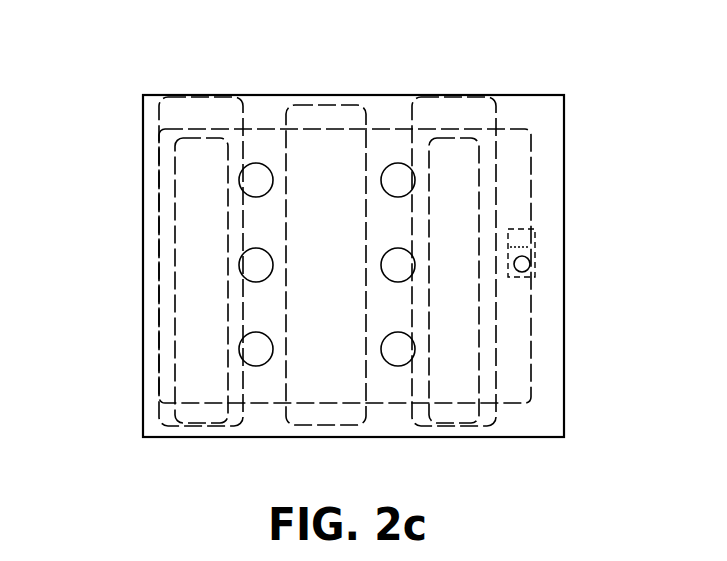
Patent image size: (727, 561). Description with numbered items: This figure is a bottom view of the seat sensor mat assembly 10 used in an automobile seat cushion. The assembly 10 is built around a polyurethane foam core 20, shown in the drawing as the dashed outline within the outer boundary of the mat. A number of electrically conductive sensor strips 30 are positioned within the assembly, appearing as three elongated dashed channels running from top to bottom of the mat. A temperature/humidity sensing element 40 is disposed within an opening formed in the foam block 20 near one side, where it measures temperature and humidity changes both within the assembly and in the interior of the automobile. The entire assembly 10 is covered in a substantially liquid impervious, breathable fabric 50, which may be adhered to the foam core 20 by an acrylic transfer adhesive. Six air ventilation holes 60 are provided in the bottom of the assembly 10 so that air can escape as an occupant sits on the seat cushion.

The seat sensor assembly 10 is at (225, 68).
The polyurethane foam core 20 is at (552, 169).
The electrically conductive sensors 30 is at (208, 420).
The temperature/humidity sensing element 40 is at (528, 250).
The breathable fabric 50 is at (536, 107).
The air ventilation holes 60 is at (255, 180).